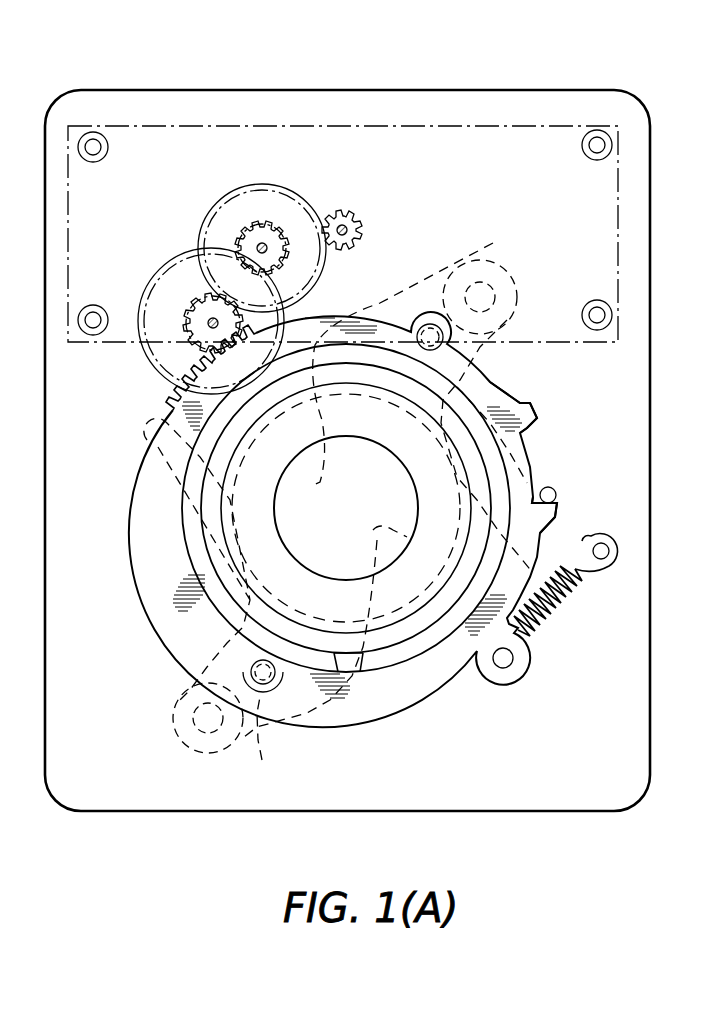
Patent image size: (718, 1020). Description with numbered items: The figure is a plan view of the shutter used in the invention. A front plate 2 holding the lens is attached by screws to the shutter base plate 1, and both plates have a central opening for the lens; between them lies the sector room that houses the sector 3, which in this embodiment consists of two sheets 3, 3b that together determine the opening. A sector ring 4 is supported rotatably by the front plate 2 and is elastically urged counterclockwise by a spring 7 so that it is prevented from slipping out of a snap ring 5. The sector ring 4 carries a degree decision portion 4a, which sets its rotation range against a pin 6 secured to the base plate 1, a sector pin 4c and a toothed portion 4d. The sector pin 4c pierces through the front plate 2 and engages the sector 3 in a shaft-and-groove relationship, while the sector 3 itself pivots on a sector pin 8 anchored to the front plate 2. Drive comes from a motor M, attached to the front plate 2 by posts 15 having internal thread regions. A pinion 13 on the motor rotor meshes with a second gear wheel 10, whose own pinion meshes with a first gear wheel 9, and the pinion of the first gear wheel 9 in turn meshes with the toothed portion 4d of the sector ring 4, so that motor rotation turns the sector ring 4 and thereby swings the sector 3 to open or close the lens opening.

The shutter base plate 1 is at (652, 760).
The motor M is at (352, 132).
The posts 15 is at (612, 140).
The second gear wheel 10 is at (297, 203).
The first gear wheel 9 is at (168, 290).
The pinion 13 is at (360, 210).
The front plate 2 is at (455, 432).
The sector ring 4 is at (447, 670).
The degree decision portion 4a is at (537, 418).
The sector pin 4c is at (262, 760).
The toothed portion 4d is at (165, 396).
The snap ring 5 is at (403, 653).
The pin 6 is at (558, 492).
The spring 7 is at (582, 592).
The sector pin 8 is at (495, 292).
The sector 3 is at (422, 398).
The sector sheet 3b is at (310, 715).